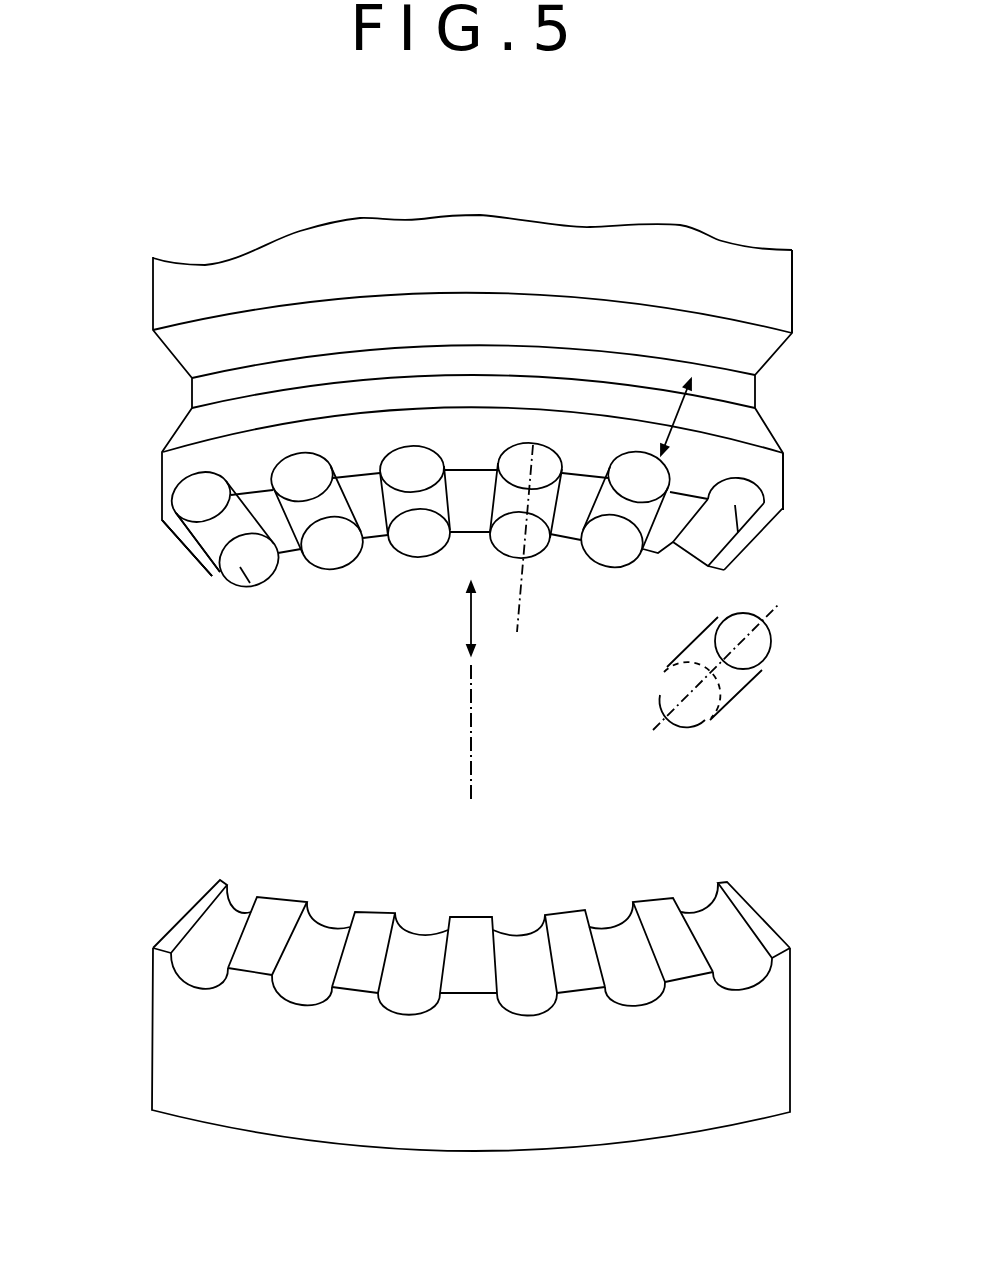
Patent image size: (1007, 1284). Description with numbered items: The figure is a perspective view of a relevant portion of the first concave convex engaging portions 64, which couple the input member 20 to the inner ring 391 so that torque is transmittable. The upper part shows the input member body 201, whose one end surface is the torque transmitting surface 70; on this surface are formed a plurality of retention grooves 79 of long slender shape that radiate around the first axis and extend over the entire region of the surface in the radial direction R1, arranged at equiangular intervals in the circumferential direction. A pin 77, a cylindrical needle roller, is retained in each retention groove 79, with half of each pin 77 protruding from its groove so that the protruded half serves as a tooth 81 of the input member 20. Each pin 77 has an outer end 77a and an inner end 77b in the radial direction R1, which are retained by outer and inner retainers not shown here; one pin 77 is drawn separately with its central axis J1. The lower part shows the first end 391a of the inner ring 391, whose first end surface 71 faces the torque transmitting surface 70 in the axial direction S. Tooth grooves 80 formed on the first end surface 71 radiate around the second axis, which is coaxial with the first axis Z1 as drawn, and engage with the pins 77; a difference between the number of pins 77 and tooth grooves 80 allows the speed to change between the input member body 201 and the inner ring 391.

The input member 20 is at (160, 483).
The input member body 201 is at (165, 448).
The torque transmitting surface 70 is at (568, 522).
The pin 77 is at (484, 453).
The outer end of pin 77a is at (193, 535).
The inner end of pin 77b is at (242, 572).
The retention groove 79 is at (754, 541).
The tooth 81 is at (403, 542).
The first concave convex engaging portions 64 is at (205, 573).
The radial direction R1 is at (680, 413).
The axial direction S is at (463, 618).
The central axis of pin J1 is at (807, 665).
The first axis Z1 is at (471, 748).
The inner ring 391 is at (418, 992).
The first end of inner ring 391a is at (170, 1020).
The tooth groove 80 is at (213, 943).
The first end surface 71 is at (283, 913).